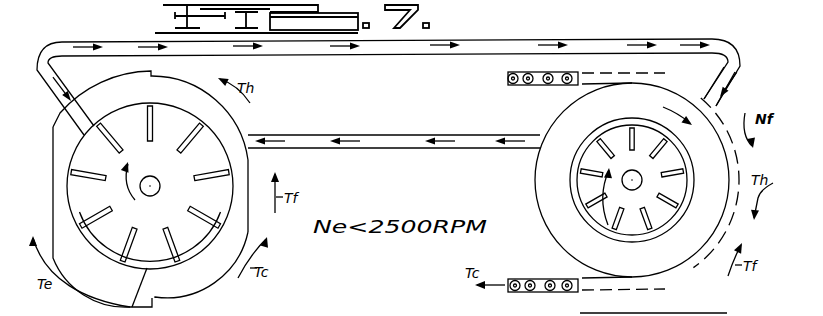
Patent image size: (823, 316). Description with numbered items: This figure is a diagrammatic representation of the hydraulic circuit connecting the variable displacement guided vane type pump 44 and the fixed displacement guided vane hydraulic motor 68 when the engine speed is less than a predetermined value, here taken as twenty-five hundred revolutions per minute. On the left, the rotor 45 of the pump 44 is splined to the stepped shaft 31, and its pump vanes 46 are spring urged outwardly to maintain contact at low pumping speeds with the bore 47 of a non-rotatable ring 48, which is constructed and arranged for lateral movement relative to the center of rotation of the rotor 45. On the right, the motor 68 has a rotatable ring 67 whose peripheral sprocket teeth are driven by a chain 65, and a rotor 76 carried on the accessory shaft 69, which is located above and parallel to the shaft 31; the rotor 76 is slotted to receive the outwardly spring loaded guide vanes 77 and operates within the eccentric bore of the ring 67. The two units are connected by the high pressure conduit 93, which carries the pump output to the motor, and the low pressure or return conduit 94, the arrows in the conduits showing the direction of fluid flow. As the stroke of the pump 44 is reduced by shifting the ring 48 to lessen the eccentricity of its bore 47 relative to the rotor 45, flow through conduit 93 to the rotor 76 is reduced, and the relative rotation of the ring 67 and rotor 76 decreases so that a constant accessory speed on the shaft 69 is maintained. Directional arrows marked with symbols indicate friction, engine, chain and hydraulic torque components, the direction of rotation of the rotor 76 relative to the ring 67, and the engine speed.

The stepped shaft 31 is at (160, 181).
The variable displacement guided vane type pump 44 is at (262, 120).
The rotor 45 is at (168, 166).
The pump vanes 46 is at (127, 261).
The bore 47 is at (141, 292).
The non-rotatable ring 48 is at (173, 279).
The chain 65 is at (533, 86).
The rotatable ring 67 is at (680, 258).
The fixed displacement guided vane hydraulic motor 68 is at (730, 106).
The shaft 69 is at (632, 191).
The rotor 76 is at (585, 177).
The guide vanes 77 is at (588, 213).
The high pressure conduit 93 is at (390, 55).
The low pressure or return conduit 94 is at (392, 149).